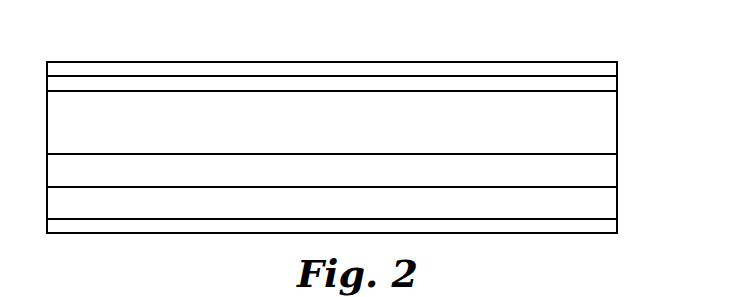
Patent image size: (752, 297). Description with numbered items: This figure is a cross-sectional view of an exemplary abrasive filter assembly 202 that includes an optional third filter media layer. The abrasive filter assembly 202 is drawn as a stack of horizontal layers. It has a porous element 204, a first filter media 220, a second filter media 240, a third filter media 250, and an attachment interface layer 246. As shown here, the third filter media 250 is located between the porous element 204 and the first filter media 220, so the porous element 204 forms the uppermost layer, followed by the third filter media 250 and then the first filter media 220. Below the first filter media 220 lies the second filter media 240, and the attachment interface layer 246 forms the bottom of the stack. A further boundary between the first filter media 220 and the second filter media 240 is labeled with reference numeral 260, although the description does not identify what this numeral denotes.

The abrasive filter assembly 202 is at (548, 43).
The porous element 204 is at (608, 70).
The third filter media 250 is at (608, 83).
The first filter media 220 is at (608, 117).
The layer 260 is at (608, 165).
The second filter media 240 is at (608, 198).
The attachment interface layer 246 is at (608, 226).